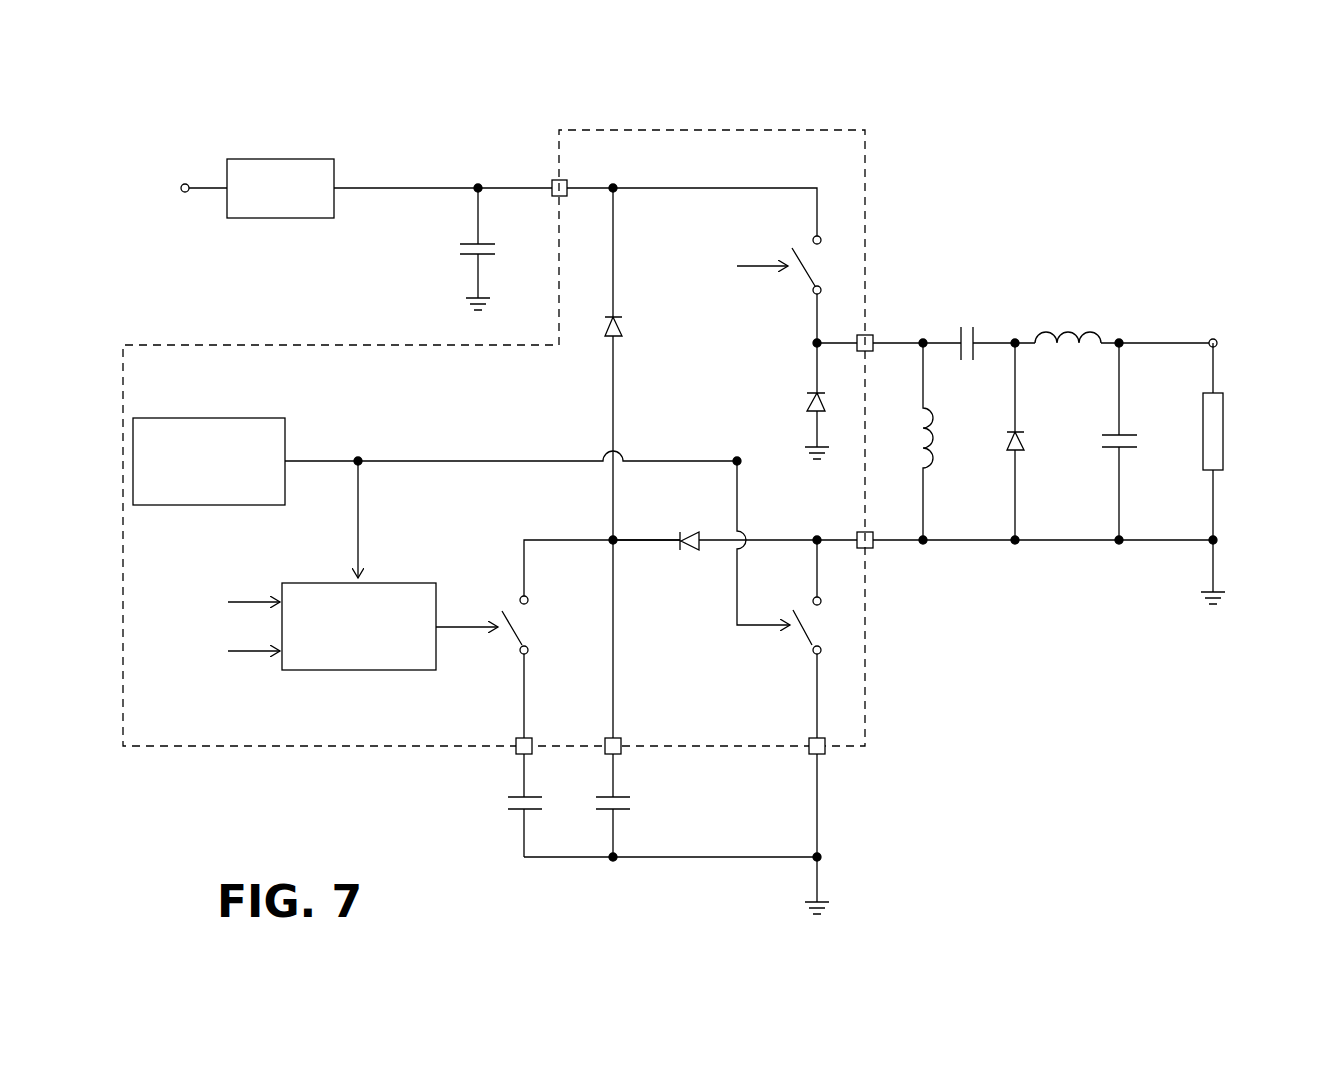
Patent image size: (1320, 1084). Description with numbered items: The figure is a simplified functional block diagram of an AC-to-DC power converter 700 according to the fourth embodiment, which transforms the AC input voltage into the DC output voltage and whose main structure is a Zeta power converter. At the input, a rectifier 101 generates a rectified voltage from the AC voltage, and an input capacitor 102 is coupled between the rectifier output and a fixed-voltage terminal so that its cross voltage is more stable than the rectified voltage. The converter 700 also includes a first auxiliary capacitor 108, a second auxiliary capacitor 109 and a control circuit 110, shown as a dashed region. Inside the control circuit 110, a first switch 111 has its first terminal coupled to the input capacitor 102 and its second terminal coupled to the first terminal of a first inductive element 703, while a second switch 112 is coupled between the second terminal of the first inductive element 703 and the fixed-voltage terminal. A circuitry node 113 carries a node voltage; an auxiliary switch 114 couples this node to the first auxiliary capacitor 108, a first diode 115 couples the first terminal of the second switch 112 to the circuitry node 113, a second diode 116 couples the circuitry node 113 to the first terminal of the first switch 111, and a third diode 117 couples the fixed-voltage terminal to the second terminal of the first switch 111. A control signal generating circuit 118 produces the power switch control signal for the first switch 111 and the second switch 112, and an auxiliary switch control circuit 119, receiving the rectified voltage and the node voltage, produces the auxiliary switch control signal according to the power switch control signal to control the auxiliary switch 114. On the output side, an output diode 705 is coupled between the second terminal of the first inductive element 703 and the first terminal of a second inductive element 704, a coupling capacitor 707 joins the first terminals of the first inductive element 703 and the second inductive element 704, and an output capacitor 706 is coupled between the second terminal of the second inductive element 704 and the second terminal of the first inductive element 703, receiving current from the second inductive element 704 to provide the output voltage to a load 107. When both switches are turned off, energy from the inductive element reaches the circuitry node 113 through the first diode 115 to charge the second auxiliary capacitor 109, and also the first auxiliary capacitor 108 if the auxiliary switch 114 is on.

The AC-to-DC power converter 700 is at (1206, 166).
The rectifier 101 is at (280, 159).
The input capacitor 102 is at (462, 247).
The load 107 is at (1225, 430).
The first auxiliary capacitor 108 is at (505, 803).
The second auxiliary capacitor 109 is at (625, 803).
The control circuit 110 is at (277, 345).
The first switch 111 is at (823, 266).
The second switch 112 is at (823, 625).
The circuitry node 113 is at (610, 535).
The auxiliary switch 114 is at (540, 620).
The first diode 115 is at (688, 555).
The second diode 116 is at (622, 328).
The third diode 117 is at (808, 402).
The control signal generating circuit 118 is at (208, 418).
The auxiliary switch control circuit 119 is at (358, 670).
The first inductive element 703 is at (940, 440).
The second inductive element 704 is at (1070, 328).
The output diode 705 is at (1024, 440).
The output capacitor 706 is at (1140, 440).
The coupling capacitor 707 is at (967, 328).